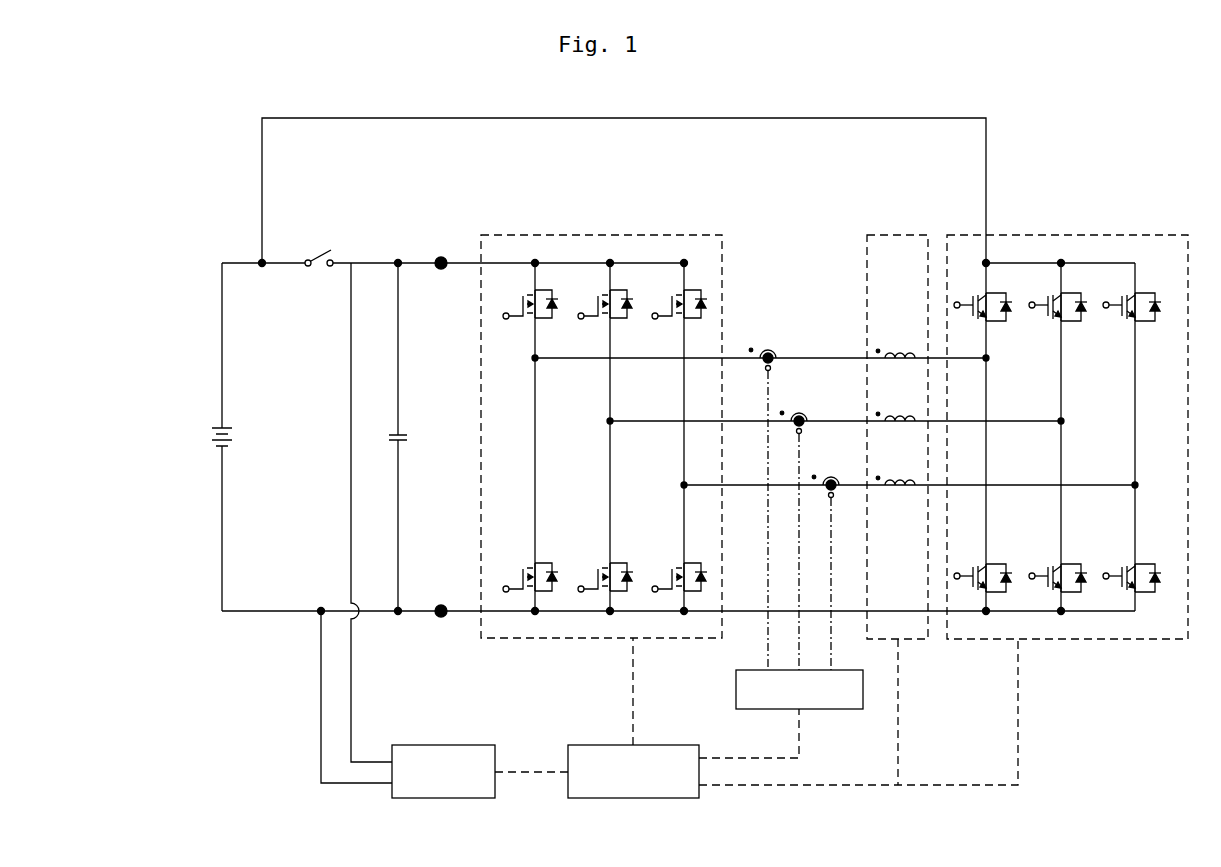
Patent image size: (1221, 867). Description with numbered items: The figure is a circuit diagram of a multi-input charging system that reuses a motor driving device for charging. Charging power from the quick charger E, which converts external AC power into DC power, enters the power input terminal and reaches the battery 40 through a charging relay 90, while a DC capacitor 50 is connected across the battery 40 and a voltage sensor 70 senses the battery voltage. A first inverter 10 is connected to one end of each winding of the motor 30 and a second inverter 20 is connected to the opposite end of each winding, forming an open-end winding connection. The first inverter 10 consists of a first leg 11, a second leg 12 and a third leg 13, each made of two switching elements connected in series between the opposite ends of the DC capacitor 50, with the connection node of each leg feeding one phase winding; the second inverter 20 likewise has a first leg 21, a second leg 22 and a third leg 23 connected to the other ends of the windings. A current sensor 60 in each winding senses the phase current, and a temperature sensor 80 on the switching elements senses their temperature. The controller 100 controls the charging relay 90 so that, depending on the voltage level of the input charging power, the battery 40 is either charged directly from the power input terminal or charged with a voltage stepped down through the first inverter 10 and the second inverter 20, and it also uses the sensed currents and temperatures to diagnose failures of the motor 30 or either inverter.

The first inverter 10 is at (601, 235).
The first leg 11 is at (535, 623).
The second leg 12 is at (610, 623).
The third leg 13 is at (684, 623).
The second inverter 20 is at (1068, 235).
The first leg 21 is at (986, 623).
The second leg 22 is at (1061, 623).
The third leg 23 is at (1135, 623).
The motor 30 is at (905, 235).
The battery 40 is at (218, 426).
The DC capacitor 50 is at (400, 432).
The current sensor 60 is at (842, 710).
The voltage sensor 70 is at (441, 257).
The temperature sensor 80 is at (548, 290).
The charging relay 90 is at (319, 254).
The controller 100 is at (633, 799).
The quick charger E is at (447, 799).